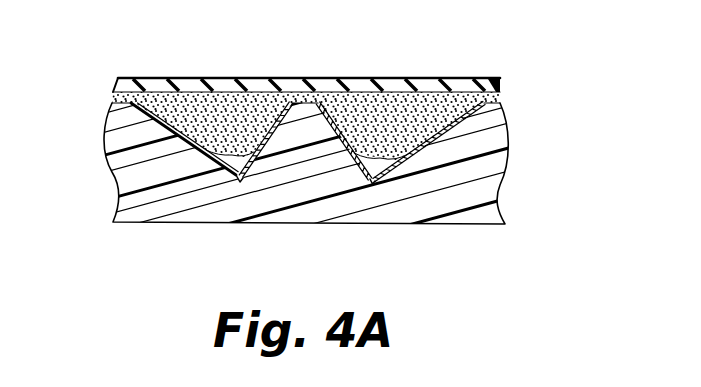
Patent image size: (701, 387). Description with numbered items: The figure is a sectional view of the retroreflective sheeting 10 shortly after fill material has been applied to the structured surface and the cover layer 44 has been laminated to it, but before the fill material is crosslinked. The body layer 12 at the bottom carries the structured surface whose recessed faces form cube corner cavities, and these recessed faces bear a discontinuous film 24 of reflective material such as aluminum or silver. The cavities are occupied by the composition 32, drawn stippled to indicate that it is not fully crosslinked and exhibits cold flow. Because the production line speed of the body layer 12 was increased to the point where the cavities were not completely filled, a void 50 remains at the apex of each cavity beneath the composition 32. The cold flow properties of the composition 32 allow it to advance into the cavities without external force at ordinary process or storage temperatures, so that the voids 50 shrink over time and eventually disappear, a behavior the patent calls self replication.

The retroreflective sheeting 10 is at (497, 41).
The body layer 12 is at (121, 165).
The discontinuous film of reflective material 24 is at (340, 112).
The composition 32 is at (218, 107).
The cover layer 44 is at (449, 81).
The void 50 is at (233, 157).